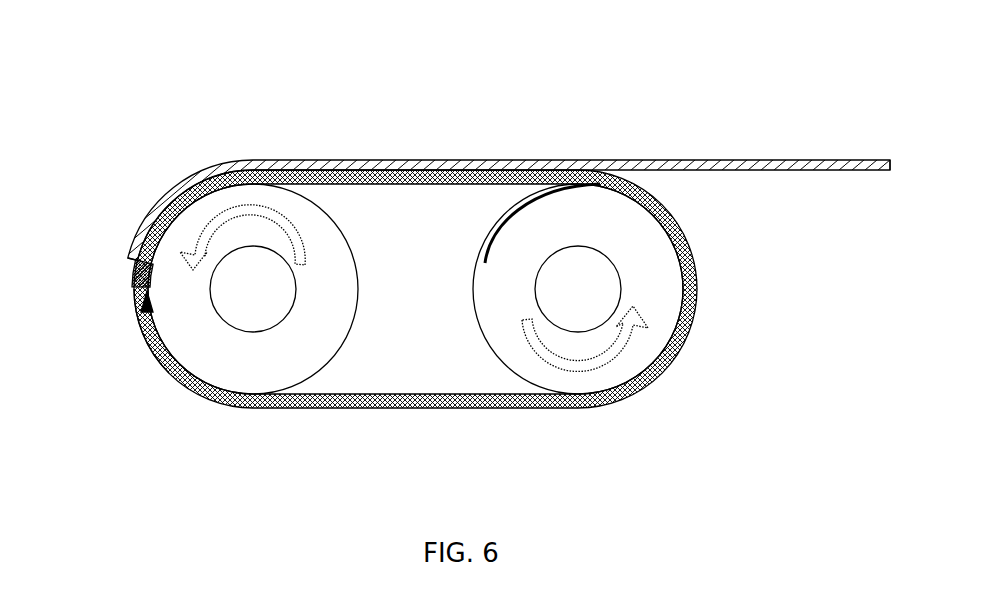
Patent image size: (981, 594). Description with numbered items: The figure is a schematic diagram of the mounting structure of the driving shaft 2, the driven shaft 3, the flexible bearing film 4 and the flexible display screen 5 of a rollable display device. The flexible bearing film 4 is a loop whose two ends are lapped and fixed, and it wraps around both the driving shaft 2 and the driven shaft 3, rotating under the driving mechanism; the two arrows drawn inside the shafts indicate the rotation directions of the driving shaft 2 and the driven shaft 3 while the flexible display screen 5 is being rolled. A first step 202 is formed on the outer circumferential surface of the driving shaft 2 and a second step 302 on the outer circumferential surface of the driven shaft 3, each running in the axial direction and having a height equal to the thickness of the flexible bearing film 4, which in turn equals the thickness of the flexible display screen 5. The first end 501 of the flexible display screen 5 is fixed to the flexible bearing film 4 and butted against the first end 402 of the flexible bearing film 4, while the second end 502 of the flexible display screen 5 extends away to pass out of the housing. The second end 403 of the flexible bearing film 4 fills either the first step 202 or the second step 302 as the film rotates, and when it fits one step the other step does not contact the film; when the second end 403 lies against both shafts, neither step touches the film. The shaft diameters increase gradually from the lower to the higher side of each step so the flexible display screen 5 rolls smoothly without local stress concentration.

The driving shaft 2 is at (250, 367).
The driven shaft 3 is at (602, 378).
The flexible bearing film 4 is at (690, 272).
The flexible display screen 5 is at (740, 177).
The first step 202 is at (142, 338).
The second step 302 is at (478, 262).
The first end of flexible bearing film 402 is at (132, 267).
The second end of flexible bearing film 403 is at (130, 292).
The first end of flexible display screen 501 is at (136, 255).
The second end of flexible display screen 502 is at (862, 162).